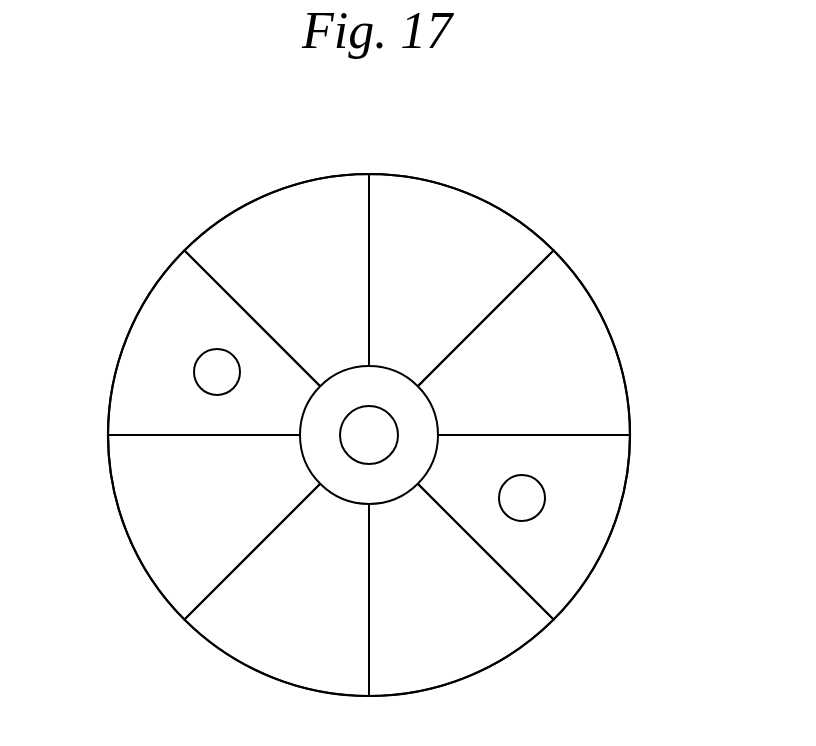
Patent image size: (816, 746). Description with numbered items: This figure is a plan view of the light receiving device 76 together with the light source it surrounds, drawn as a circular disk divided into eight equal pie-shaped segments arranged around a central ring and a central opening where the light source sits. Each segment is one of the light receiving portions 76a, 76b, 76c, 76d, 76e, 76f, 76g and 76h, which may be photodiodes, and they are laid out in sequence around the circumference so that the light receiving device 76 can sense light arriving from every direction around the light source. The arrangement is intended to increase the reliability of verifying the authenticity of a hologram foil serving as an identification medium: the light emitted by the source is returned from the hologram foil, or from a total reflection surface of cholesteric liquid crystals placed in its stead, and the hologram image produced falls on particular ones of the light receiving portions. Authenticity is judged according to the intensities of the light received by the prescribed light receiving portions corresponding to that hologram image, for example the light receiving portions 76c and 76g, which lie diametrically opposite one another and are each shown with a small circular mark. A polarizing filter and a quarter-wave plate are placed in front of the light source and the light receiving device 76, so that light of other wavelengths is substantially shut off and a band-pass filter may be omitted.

The light receiving device 76 is at (376, 408).
The light receiving portion 76a is at (492, 217).
The light receiving portion 76b is at (603, 360).
The light receiving portion 76c is at (598, 505).
The light receiving portion 76d is at (498, 642).
The light receiving portion 76e is at (248, 640).
The light receiving portion 76f is at (162, 557).
The light receiving portion 76g is at (148, 323).
The light receiving portion 76h is at (273, 202).